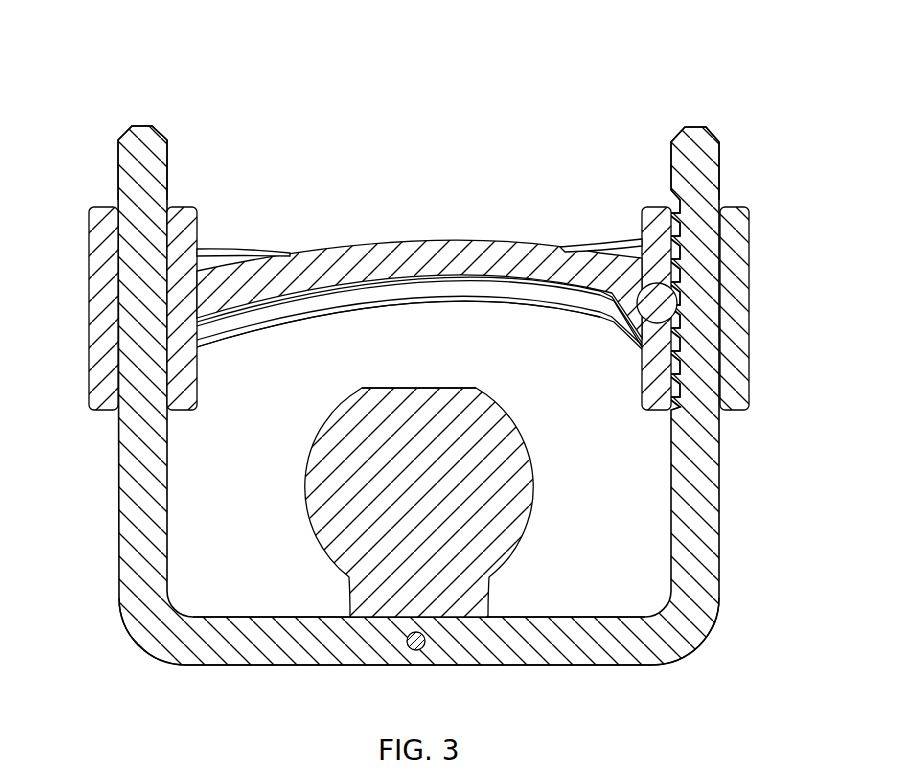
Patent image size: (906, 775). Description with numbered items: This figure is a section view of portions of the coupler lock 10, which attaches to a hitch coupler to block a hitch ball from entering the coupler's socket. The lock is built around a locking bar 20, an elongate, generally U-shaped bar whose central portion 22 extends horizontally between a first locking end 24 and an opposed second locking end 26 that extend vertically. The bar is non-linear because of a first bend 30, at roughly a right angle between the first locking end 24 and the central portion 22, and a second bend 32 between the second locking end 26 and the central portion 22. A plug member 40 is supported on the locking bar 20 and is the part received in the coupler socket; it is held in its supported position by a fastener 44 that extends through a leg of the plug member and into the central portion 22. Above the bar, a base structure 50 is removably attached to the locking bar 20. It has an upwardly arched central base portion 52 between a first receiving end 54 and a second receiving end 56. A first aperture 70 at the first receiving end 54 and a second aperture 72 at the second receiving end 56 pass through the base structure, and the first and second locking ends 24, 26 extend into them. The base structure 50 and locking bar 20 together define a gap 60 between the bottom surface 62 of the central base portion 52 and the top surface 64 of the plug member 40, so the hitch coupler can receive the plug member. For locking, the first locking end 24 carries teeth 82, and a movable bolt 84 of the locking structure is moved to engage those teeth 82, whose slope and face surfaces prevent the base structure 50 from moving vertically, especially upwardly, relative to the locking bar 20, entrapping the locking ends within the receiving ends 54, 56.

The coupler lock 10 is at (108, 67).
The locking bar 20 is at (119, 533).
The central portion 22 is at (535, 655).
The first locking end 24 is at (697, 134).
The second locking end 26 is at (157, 141).
The first bend 30 is at (691, 644).
The second bend 32 is at (151, 639).
The plug member 40 is at (320, 404).
The fastener 44 is at (416, 651).
The base structure 50 is at (318, 234).
The central base portion 52 is at (414, 252).
The first receiving end 54 is at (750, 342).
The second receiving end 56 is at (89, 314).
The gap 60 is at (425, 362).
The bottom surface 62 is at (347, 307).
The top surface 64 is at (458, 388).
The first aperture 70 is at (717, 403).
The second aperture 72 is at (122, 396).
The teeth 82 is at (671, 201).
The bolt 84 is at (640, 347).